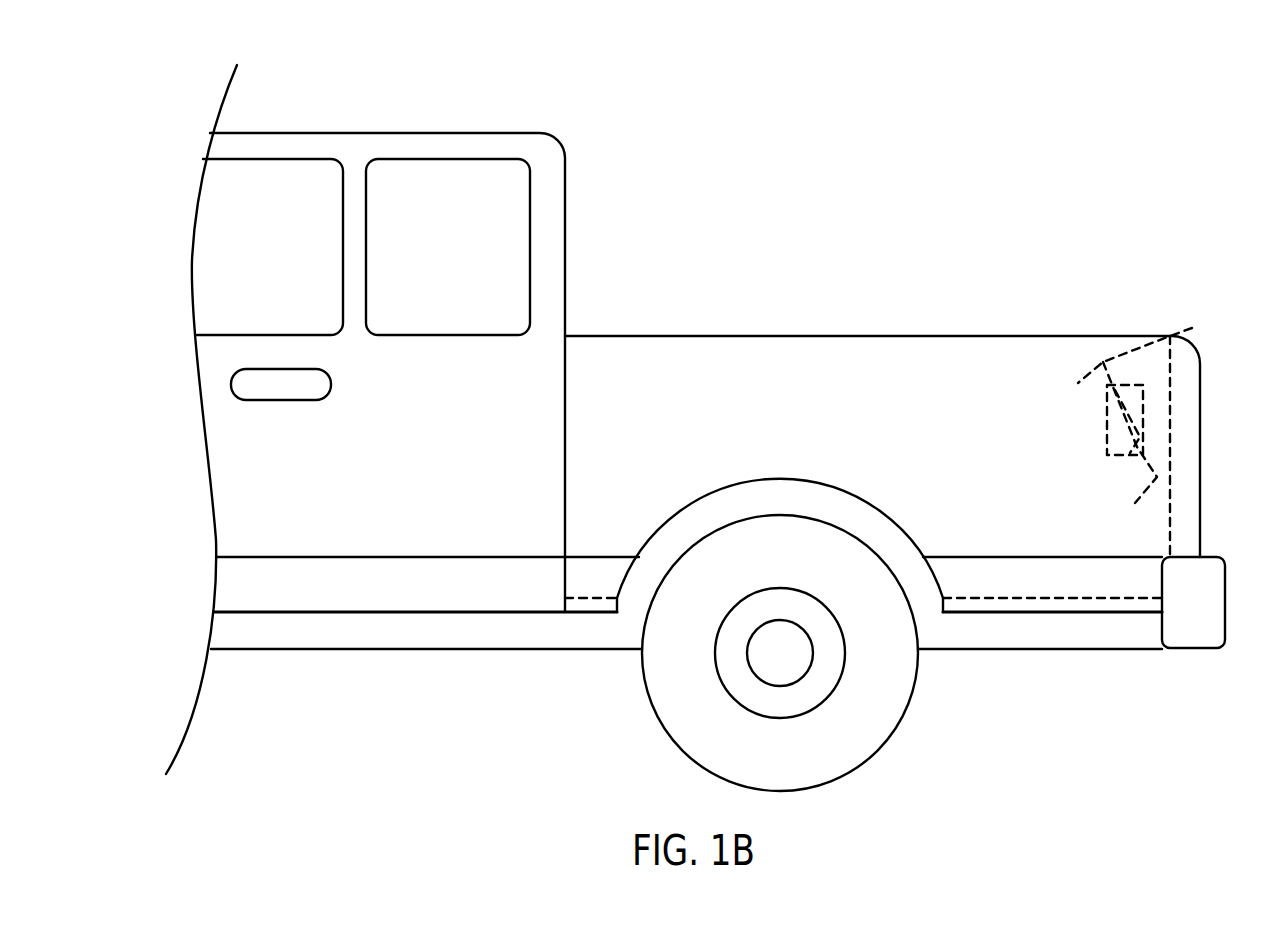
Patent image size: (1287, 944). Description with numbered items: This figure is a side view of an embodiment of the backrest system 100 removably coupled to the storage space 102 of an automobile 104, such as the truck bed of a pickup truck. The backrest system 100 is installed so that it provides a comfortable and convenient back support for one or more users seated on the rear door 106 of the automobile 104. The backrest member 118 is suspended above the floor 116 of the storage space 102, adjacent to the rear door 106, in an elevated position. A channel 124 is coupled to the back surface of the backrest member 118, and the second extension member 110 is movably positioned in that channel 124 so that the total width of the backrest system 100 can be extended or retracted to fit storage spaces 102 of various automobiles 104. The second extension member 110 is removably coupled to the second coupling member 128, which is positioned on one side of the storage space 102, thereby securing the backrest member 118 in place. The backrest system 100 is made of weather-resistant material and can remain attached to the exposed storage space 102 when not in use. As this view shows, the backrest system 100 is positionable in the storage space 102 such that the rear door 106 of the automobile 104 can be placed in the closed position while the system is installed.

The backrest system 100 is at (1113, 320).
The storage space 102 is at (853, 333).
The automobile 104 is at (441, 107).
The rear door 106 is at (1170, 510).
The second extension member 110 is at (1107, 418).
The floor 116 is at (987, 600).
The backrest member 118 is at (1150, 349).
The channel 124 is at (1130, 453).
The second coupling member 128 is at (1107, 443).